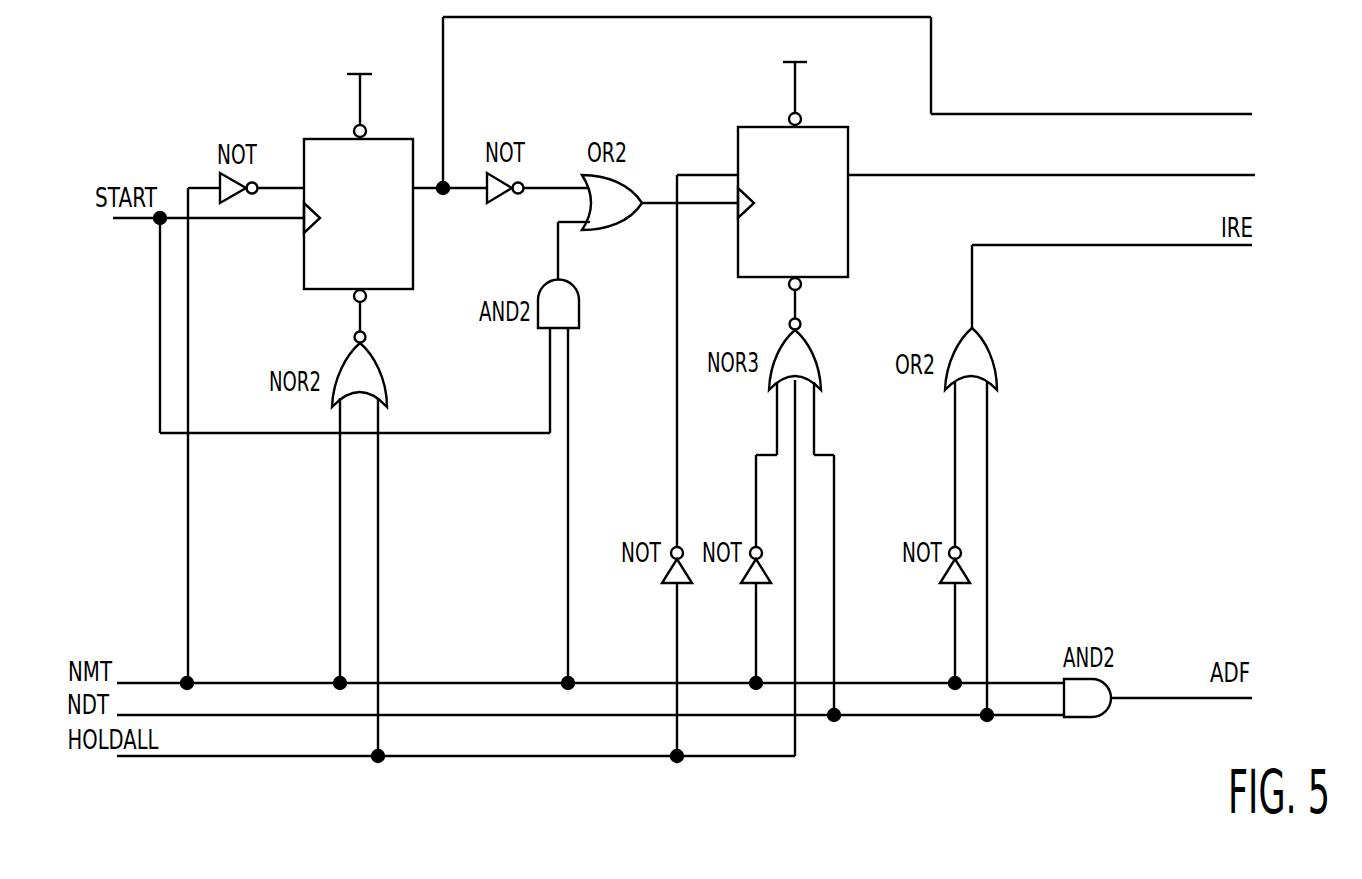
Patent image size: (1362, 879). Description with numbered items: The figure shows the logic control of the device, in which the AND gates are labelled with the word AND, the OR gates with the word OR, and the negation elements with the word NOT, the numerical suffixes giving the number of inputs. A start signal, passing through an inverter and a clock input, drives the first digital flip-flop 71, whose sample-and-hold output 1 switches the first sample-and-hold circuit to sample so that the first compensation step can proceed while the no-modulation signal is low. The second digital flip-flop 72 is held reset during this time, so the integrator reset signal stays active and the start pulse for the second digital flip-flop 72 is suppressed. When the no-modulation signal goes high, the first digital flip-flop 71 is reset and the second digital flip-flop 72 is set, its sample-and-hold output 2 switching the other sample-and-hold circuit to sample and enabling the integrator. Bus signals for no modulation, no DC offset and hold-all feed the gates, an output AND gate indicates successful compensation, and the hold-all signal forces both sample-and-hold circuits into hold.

The first digital flip-flop 71 is at (349, 226).
The second digital flip-flop 72 is at (784, 219).
The S/H1 sample-and-hold output 1 is at (832, 105).
The S/H2 sample-and-hold output 2 is at (1051, 157).